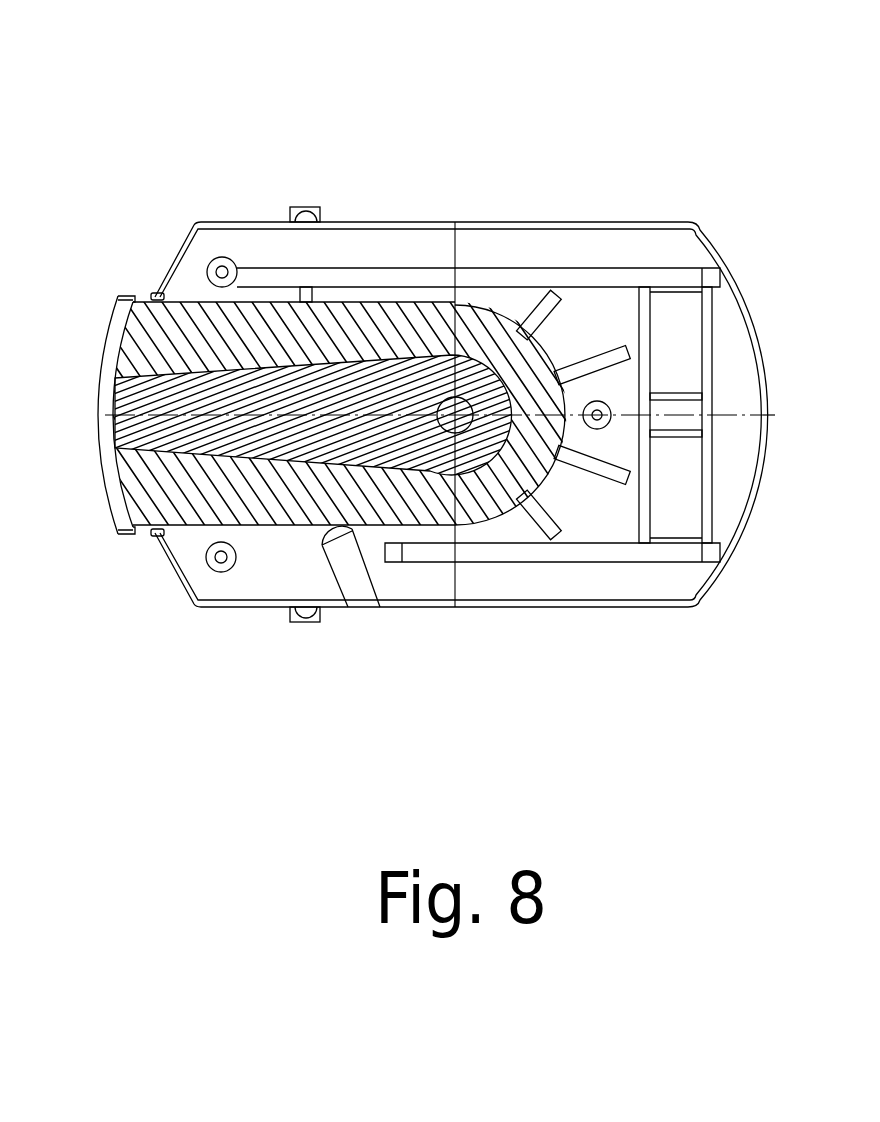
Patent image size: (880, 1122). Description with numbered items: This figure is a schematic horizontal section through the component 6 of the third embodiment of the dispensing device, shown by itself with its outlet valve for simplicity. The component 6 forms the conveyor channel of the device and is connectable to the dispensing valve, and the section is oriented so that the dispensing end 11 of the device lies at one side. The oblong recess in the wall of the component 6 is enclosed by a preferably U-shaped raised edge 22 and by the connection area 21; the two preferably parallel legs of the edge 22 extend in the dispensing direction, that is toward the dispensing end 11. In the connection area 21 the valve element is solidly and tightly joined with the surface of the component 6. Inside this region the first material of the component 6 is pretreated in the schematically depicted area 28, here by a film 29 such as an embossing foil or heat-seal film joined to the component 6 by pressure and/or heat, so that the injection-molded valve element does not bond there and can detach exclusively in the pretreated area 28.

The component 6 is at (657, 195).
The dispensing end 11 is at (109, 325).
The connection area 21 is at (257, 493).
The edge 22 is at (498, 512).
The pretreated area 28 is at (317, 342).
The film 29 is at (367, 382).